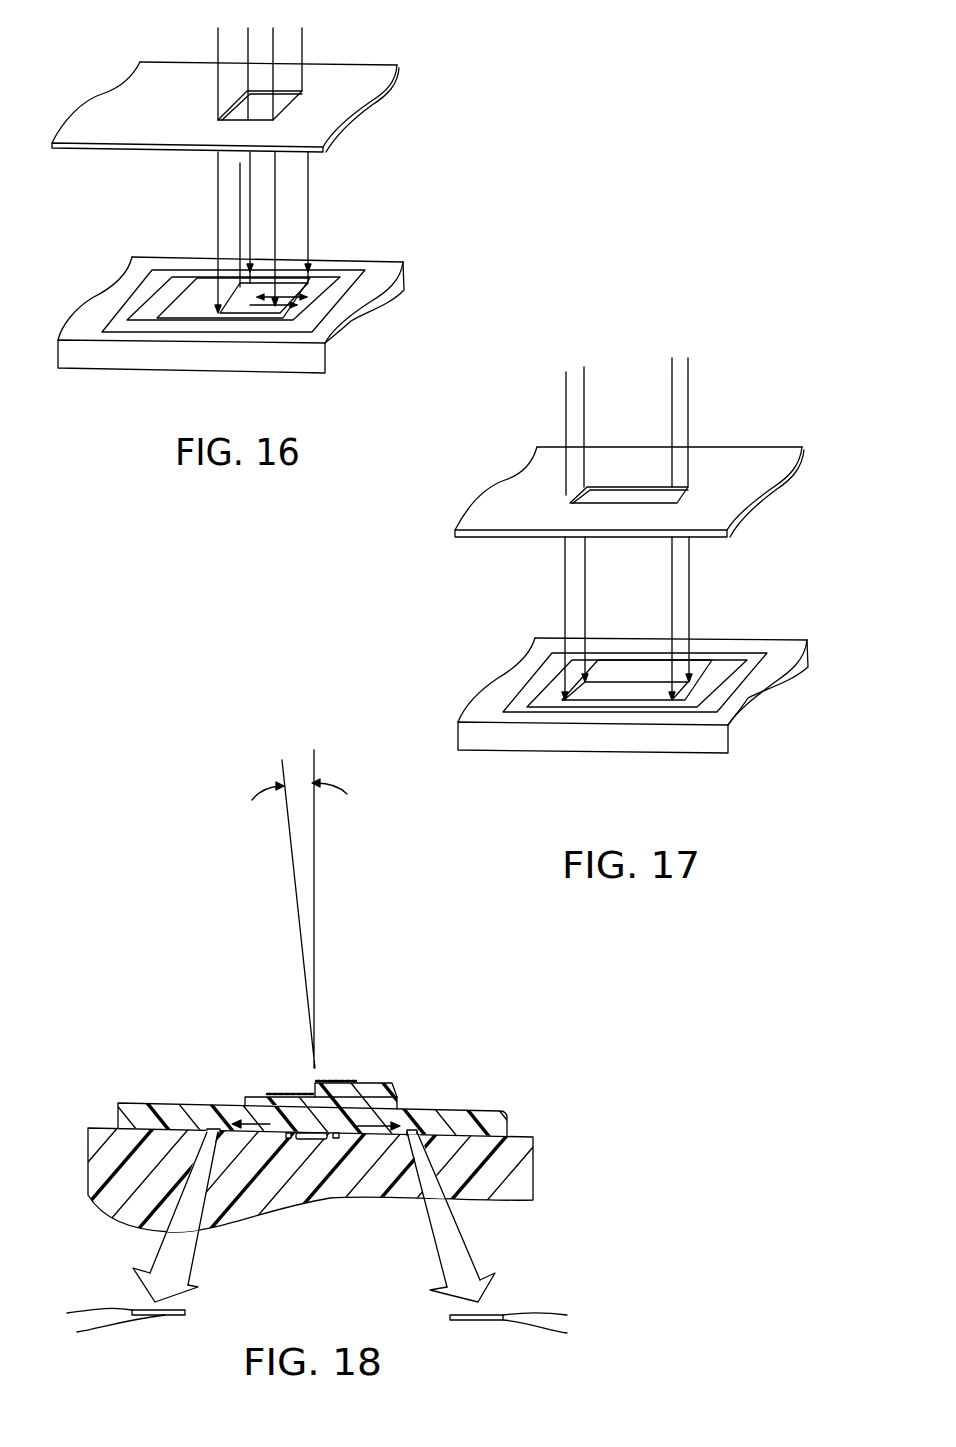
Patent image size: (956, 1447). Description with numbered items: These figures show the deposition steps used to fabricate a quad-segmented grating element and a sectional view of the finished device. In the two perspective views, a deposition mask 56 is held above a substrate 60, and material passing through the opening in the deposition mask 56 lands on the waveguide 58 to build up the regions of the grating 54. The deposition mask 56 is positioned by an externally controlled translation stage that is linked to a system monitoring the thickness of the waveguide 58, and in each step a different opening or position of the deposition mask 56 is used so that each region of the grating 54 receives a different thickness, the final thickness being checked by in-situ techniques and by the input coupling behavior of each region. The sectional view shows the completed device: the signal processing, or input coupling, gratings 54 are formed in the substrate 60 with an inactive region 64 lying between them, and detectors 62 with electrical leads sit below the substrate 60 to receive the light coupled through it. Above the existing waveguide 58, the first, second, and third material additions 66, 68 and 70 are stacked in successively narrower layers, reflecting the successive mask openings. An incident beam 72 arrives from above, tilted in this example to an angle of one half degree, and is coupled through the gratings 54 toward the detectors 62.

In FIG. 16, the grating 54 is at (250, 317).
In FIG. 17, the grating 54 is at (635, 703).
In FIG. 18, the grating 54 is at (288, 1140).
In FIG. 16, the deposition mask 56 is at (387, 82).
In FIG. 17, the deposition mask 56 is at (780, 490).
In FIG. 16, the waveguide 58 is at (153, 303).
In FIG. 17, the waveguide 58 is at (547, 695).
In FIG. 18, the waveguide 58 is at (505, 1122).
In FIG. 16, the substrate 60 is at (360, 323).
In FIG. 17, the substrate 60 is at (753, 710).
In FIG. 18, the substrate 60 is at (525, 1170).
In FIG. 18, the detector 62 is at (140, 1308).
In FIG. 18, the inactive region 64 is at (310, 1141).
In FIG. 18, the first material addition 66 is at (397, 1102).
In FIG. 18, the second material addition 68 is at (385, 1083).
In FIG. 18, the third material addition 70 is at (337, 1080).
In FIG. 18, the incident beam 72 is at (288, 847).